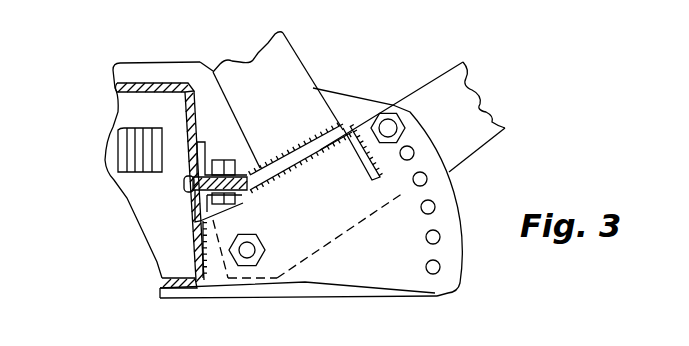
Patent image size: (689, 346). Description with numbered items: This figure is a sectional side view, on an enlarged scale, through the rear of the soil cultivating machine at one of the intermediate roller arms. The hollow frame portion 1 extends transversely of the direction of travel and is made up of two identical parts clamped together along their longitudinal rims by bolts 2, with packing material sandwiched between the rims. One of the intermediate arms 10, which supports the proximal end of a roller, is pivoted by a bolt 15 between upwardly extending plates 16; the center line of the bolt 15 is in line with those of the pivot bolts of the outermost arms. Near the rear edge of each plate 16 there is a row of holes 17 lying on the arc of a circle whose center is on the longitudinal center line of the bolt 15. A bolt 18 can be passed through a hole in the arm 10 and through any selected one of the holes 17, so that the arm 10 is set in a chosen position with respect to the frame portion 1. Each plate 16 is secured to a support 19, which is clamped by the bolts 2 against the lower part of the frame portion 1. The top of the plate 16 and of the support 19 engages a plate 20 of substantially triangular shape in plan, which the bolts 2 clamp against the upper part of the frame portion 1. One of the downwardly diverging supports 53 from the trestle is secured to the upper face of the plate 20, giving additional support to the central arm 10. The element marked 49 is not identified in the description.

The hollow frame portion 1 is at (148, 81).
The bolts 2 is at (217, 160).
The arms 10 is at (472, 115).
The bolts 15 is at (248, 250).
The plates 16 is at (385, 273).
The row of holes 17 is at (426, 237).
The bolt 18 is at (390, 128).
The support 19 is at (350, 160).
The plate 20 is at (307, 147).
The pad 49 is at (122, 142).
The downwardly diverging supports 53 is at (280, 53).